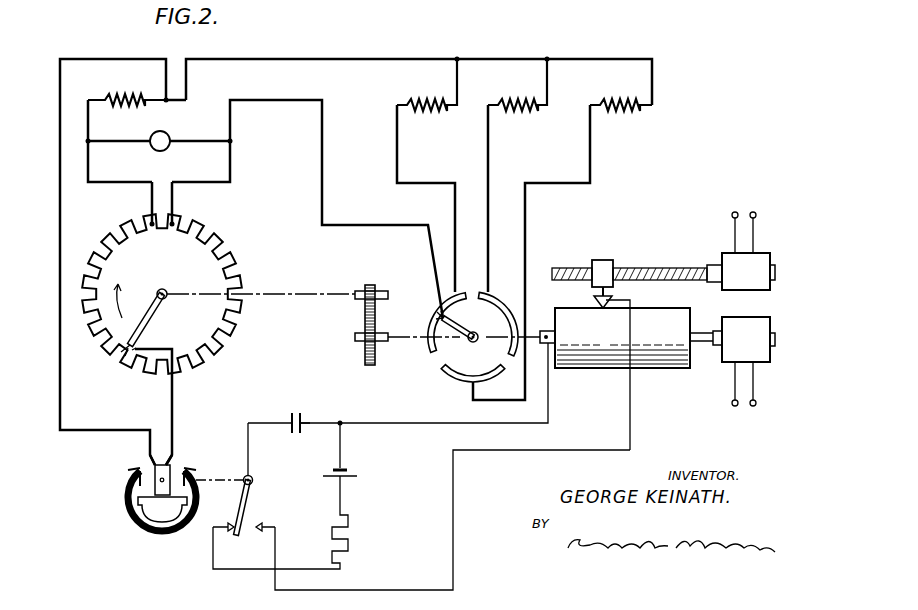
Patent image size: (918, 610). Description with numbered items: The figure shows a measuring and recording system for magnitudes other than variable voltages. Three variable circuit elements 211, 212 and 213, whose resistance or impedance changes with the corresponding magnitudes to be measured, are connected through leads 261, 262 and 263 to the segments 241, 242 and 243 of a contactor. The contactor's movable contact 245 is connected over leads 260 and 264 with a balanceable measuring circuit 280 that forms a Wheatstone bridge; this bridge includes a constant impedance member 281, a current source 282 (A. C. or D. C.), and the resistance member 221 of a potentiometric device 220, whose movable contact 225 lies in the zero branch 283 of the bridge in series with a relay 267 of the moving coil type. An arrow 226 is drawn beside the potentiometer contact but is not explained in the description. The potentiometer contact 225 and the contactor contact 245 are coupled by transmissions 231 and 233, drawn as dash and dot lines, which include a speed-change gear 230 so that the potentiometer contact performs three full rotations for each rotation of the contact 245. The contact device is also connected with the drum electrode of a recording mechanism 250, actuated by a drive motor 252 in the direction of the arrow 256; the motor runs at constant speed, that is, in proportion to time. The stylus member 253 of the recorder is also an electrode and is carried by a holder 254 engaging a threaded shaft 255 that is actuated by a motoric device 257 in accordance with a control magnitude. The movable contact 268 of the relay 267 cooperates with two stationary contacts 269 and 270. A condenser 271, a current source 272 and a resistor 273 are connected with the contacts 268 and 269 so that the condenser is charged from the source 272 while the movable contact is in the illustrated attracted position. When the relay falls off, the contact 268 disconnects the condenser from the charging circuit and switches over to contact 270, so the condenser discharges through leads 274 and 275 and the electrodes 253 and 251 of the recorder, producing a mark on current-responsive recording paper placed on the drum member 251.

The variable circuit element 211 is at (432, 98).
The variable circuit element 212 is at (528, 98).
The variable circuit element 213 is at (620, 98).
The potentiometric device 220 is at (162, 286).
The resistance member 221 is at (216, 232).
The movable contact 225 is at (120, 356).
The direction of rotation arrow 226 is at (126, 292).
The speed-change gear 230 is at (368, 288).
The transmission 231 is at (278, 292).
The transmission 233 is at (402, 346).
The segment 241 is at (434, 356).
The segment 242 is at (504, 300).
The segment 243 is at (458, 376).
The movable contact 245 is at (436, 332).
The recording mechanism 250 is at (615, 352).
The drum member 251 is at (599, 355).
The drive motor 252 is at (758, 360).
The stylus member 253 is at (594, 302).
The holder 254 is at (600, 260).
The threaded shaft 255 is at (658, 262).
The arrow 256 is at (710, 328).
The motoric device 257 is at (762, 258).
The lead 260 is at (298, 59).
The lead 261 is at (397, 132).
The lead 262 is at (488, 141).
The lead 263 is at (590, 147).
The lead 264 is at (322, 166).
The relay 267 is at (126, 496).
The movable contact 268 is at (246, 508).
The stationary contact 269 is at (232, 523).
The stationary contact 270 is at (266, 526).
The condenser 271 is at (293, 413).
The current source 272 is at (350, 472).
The resistor 273 is at (350, 533).
The lead 274 is at (392, 590).
The lead 275 is at (433, 425).
The measuring circuit 280 is at (175, 170).
The constant impedance member 281 is at (136, 96).
The current source 282 is at (168, 134).
The zero branch 283 is at (60, 172).